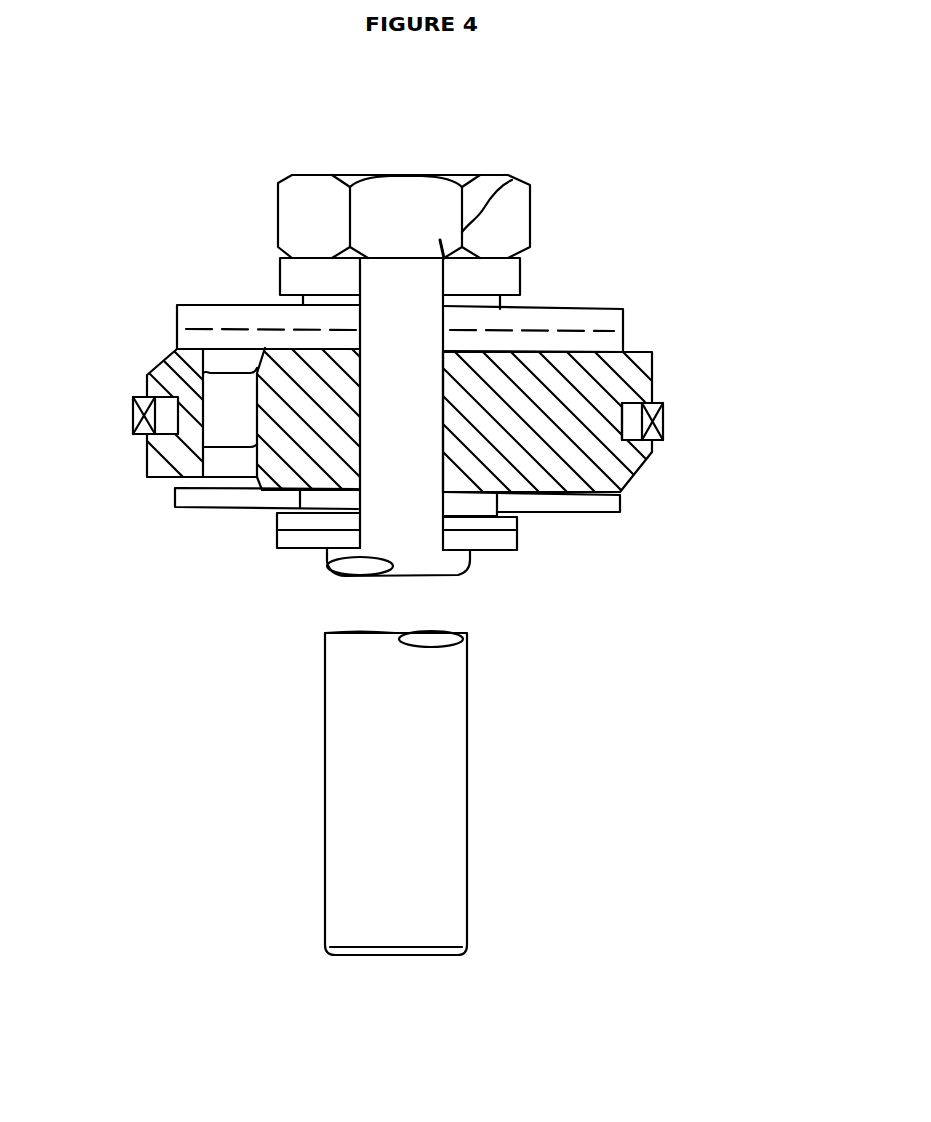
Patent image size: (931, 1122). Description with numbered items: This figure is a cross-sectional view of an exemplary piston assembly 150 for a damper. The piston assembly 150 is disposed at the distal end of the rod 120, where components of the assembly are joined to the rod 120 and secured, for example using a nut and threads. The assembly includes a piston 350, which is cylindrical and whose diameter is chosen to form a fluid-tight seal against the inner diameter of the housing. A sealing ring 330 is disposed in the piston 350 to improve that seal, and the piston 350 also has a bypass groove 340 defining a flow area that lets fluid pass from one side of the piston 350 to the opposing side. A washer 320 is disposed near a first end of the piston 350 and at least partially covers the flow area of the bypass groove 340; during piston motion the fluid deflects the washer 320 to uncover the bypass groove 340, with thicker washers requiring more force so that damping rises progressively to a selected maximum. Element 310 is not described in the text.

The bolt 310 is at (475, 170).
The washer 320 is at (190, 303).
The piston 350 is at (660, 352).
The bypass groove 340 is at (233, 422).
The sealing ring 330 is at (667, 417).
The piston assembly 150 is at (640, 553).
The rod 120 is at (467, 783).